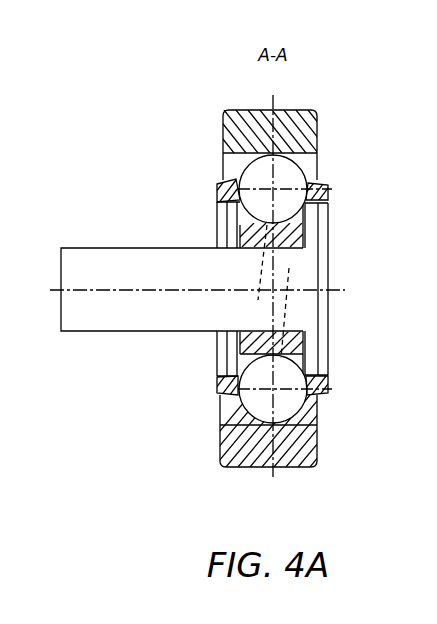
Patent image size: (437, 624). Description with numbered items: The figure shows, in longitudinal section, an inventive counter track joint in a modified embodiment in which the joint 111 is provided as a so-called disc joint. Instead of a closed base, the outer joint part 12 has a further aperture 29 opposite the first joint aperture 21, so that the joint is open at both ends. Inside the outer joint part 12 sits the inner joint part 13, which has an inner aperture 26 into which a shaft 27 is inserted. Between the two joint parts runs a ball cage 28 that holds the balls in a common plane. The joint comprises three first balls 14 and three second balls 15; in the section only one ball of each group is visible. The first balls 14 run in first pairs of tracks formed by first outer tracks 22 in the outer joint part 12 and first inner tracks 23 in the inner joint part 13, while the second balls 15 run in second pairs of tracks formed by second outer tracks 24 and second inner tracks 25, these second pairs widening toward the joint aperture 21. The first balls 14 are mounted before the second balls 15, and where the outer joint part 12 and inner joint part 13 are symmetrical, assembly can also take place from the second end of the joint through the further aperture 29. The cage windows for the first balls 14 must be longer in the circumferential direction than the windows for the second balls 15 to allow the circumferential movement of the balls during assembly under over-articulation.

The joint 111 is at (350, 86).
The outer joint part 12 is at (240, 112).
The inner joint part 13 is at (237, 232).
The first balls 14 is at (258, 463).
The second balls 15 is at (305, 112).
The joint aperture 21 is at (222, 180).
The first outer tracks 22 is at (280, 457).
The first inner tracks 23 is at (303, 360).
The second outer tracks 24 is at (260, 125).
The second inner tracks 25 is at (318, 215).
The inner aperture 26 is at (262, 250).
The shaft 27 is at (111, 258).
The ball cage 28 is at (330, 187).
The further aperture 29 is at (320, 163).